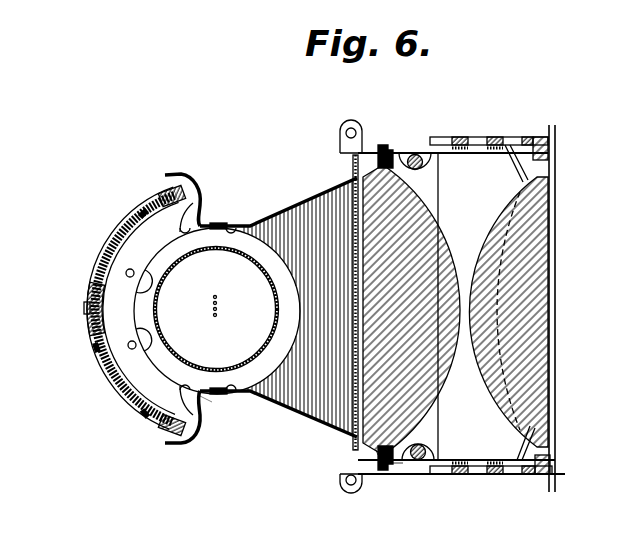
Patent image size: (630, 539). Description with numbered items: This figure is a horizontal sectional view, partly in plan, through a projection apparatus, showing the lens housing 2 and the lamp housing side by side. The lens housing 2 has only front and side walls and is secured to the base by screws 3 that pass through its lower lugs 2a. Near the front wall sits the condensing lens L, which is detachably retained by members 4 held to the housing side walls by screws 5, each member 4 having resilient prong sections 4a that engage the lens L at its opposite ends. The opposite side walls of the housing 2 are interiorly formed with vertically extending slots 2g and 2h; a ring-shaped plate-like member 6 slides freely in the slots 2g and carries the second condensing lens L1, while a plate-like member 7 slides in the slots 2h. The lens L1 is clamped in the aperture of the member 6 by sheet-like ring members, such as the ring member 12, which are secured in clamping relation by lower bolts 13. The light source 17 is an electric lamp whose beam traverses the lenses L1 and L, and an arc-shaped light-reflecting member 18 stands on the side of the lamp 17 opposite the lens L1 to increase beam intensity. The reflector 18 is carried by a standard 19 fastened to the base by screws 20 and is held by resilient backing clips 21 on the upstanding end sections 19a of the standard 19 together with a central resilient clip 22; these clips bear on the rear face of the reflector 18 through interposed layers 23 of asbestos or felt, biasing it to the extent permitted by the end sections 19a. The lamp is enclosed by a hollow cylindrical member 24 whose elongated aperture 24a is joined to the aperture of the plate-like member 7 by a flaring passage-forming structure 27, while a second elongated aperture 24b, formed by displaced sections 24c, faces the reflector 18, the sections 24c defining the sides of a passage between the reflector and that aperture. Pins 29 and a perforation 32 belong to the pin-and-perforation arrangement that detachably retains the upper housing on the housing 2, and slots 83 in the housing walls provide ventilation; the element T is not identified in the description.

The lens housing 2 is at (410, 468).
The lower lugs 2a is at (430, 164).
The slots 2g is at (393, 156).
The slots 2h is at (345, 151).
The screws 3 is at (419, 155).
The members 4 is at (533, 137).
The resilient prong sections 4a is at (552, 160).
The screws 5 is at (470, 153).
The plate-like member 6 is at (378, 450).
The plate-like member 7 is at (353, 157).
The ring member 12 is at (352, 121).
The lower bolts 13 is at (377, 145).
The source of light 17 is at (256, 357).
The light-reflecting member 18 is at (118, 233).
The standard 19 is at (118, 290).
The upstanding end sections 19a is at (175, 186).
The screws 20 is at (126, 273).
The resilient backing clips 21 is at (166, 191).
The resilient clip 22 is at (88, 322).
The layers 23 is at (147, 210).
The hollow cylindrical member 24 is at (214, 402).
The elongated aperture 24a is at (236, 224).
The second elongated aperture 24b is at (214, 226).
The displaced sections 24c is at (183, 174).
The passage or channel-forming structure 27 is at (298, 222).
The pins 29 is at (391, 468).
The perforation 32 is at (354, 485).
The slots 83 is at (477, 137).
The condensing lens L is at (522, 333).
The condensing lens L1 is at (386, 253).
The tube wall T is at (557, 270).